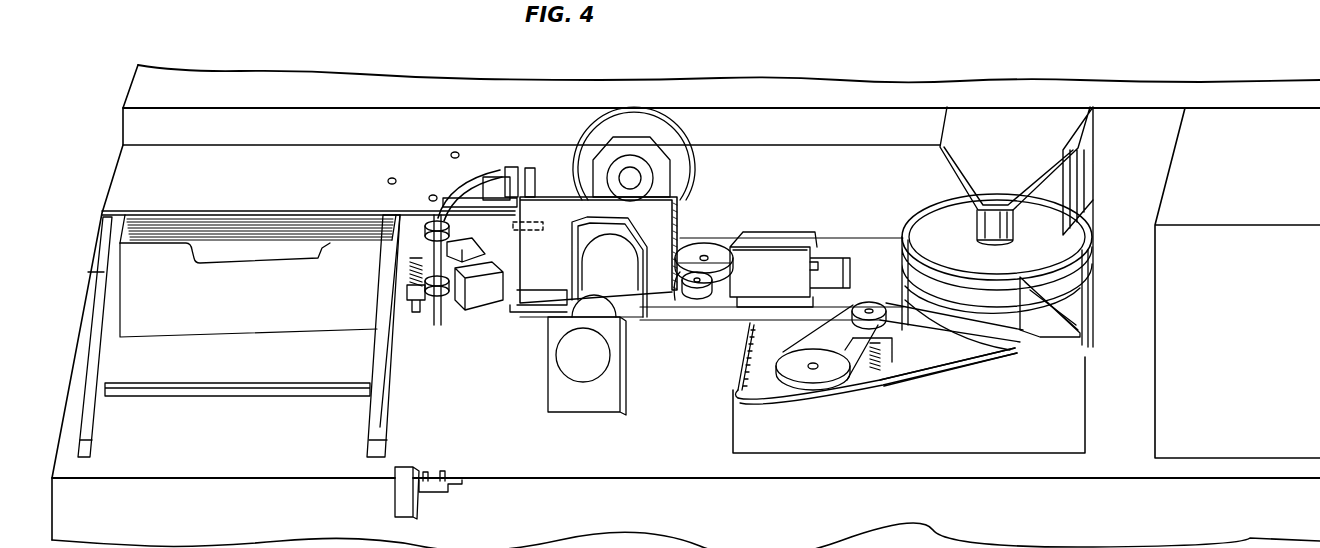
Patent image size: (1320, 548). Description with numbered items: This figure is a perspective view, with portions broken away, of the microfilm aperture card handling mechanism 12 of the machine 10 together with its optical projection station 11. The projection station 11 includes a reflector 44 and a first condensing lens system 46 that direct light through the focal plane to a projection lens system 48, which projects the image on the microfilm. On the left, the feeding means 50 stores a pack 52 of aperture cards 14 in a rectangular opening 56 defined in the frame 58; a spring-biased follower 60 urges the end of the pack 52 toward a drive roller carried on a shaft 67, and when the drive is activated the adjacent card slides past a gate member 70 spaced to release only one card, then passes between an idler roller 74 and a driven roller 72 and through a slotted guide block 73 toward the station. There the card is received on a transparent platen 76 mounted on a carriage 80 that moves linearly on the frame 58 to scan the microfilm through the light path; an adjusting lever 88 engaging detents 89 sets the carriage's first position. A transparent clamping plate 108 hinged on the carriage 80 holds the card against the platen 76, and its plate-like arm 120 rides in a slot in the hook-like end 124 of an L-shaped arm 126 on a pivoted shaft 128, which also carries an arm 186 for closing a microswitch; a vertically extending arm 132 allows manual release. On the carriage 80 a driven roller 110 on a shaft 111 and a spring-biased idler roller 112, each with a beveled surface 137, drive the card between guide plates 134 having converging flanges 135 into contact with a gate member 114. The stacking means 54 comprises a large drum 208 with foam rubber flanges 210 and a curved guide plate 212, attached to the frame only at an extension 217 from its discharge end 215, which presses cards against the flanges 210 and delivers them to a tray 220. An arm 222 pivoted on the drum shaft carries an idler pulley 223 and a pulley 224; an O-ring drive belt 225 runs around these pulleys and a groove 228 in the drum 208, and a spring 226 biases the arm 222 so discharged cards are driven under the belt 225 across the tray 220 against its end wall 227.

The machine 10 is at (325, 63).
The optical projection station 11 is at (620, 304).
The microfilm aperture card handling mechanism 12 is at (677, 215).
The aperture card 14 is at (271, 222).
The reflector 44 is at (565, 358).
The first condensing lens system 46 is at (620, 271).
The projection lens system 48 is at (632, 162).
The feeding means 50 is at (432, 318).
The pack of aperture cards 52 is at (245, 258).
The stacking means 54 is at (1090, 208).
The rectangular opening 56 is at (105, 355).
The frame 58 is at (268, 461).
The follower 60 is at (300, 370).
The shaft 67 is at (388, 179).
The gate member 70 is at (418, 295).
The roller 72 is at (445, 292).
The slotted guide block 73 is at (482, 298).
The idler roller 74 is at (440, 292).
The transparent platen 76 is at (565, 270).
The carriage 80 is at (540, 305).
The adjusting lever 88 is at (393, 496).
The detents 89 is at (443, 471).
The clamping plate 108 is at (680, 176).
The roller 110 is at (718, 250).
The shaft 111 is at (697, 255).
The idler roller 112 is at (698, 294).
The gate member 114 is at (810, 262).
The plate-like arm 120 is at (513, 228).
The hook-like end 124 is at (497, 232).
The L-shaped arm 126 is at (497, 205).
The shaft 128 is at (429, 198).
The vertically extending arm 132 is at (531, 170).
The guide plates 134 is at (787, 291).
The converging flanges 135 is at (770, 235).
The beveled surface 137 is at (686, 296).
The arm 186 is at (470, 242).
The drum 208 is at (1065, 244).
The flanges 210 is at (913, 205).
The curved guide plate 212 is at (1093, 260).
The discharge end 215 is at (1017, 293).
The extension 217 is at (1053, 317).
The tray 220 is at (1012, 426).
The arm 222 is at (853, 357).
The idler pulley 223 is at (870, 302).
The pulley 224 is at (792, 358).
The O-ring drive belt 225 is at (905, 357).
The spring 226 is at (875, 370).
The end wall 227 is at (747, 378).
The groove 228 is at (1005, 345).